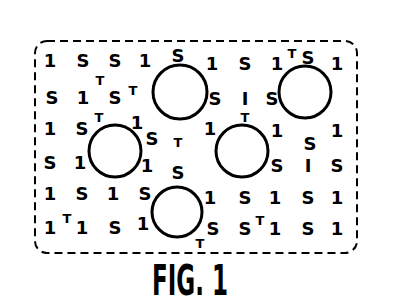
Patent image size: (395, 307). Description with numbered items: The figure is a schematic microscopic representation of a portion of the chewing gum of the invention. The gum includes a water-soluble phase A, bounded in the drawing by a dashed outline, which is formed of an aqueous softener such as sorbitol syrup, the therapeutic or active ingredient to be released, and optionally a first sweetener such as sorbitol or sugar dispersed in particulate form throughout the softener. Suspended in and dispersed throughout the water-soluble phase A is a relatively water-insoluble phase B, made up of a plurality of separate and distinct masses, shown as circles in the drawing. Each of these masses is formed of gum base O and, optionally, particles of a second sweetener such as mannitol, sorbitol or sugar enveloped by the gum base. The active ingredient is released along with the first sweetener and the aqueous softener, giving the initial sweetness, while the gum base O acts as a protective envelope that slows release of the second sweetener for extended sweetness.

The water-soluble phase A is at (53, 110).
The water-insoluble phase B is at (206, 85).
The gum base O is at (188, 65).